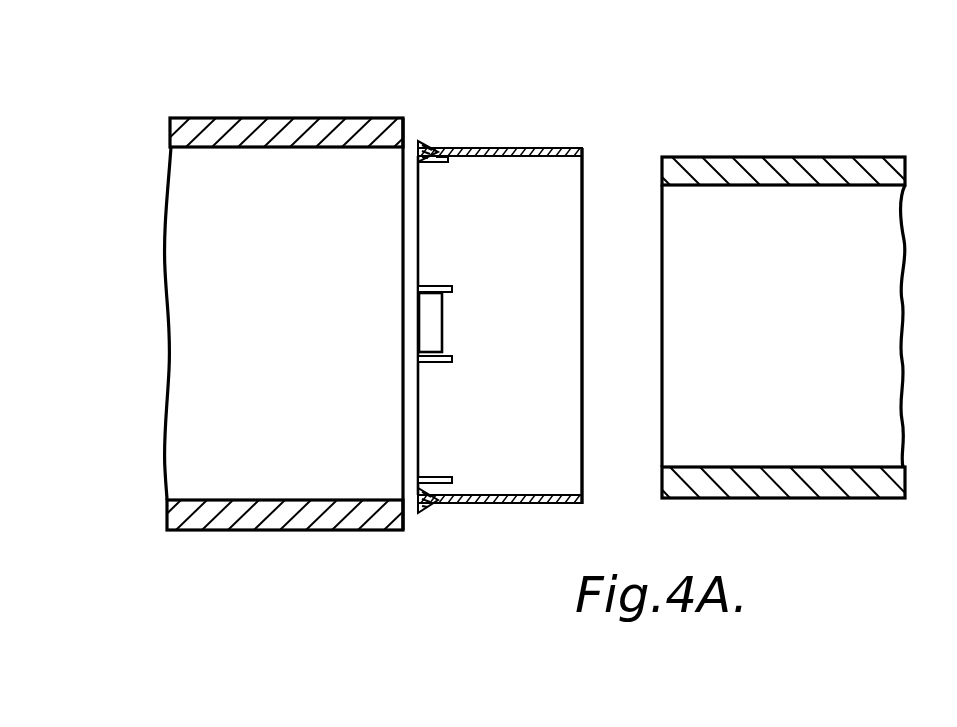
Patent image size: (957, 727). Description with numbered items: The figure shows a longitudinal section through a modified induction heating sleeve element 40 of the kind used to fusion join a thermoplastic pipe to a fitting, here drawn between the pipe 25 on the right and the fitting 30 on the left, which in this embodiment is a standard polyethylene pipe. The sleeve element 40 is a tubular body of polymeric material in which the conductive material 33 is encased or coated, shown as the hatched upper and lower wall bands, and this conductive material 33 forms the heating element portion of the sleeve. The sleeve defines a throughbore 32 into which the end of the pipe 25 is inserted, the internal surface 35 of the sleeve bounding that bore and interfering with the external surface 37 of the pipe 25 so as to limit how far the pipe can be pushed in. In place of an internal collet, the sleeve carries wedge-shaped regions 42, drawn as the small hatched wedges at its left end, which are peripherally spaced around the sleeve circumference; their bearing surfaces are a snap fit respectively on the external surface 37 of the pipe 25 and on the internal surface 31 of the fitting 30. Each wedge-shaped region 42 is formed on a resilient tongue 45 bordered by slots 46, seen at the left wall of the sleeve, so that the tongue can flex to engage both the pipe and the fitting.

The fitting 30 is at (365, 108).
The internal surface of pipe 30 31 is at (275, 148).
The throughbore 32 is at (524, 350).
The conductive material 33 is at (480, 504).
The internal surface 35 is at (522, 152).
The external surface of pipe 25 37 is at (745, 140).
The pipe 25 is at (786, 485).
The induction heating sleeve element 40 is at (553, 505).
The wedge-shaped regions 42 is at (444, 156).
The resilient tongues 45 is at (444, 329).
The slots 46 is at (429, 287).